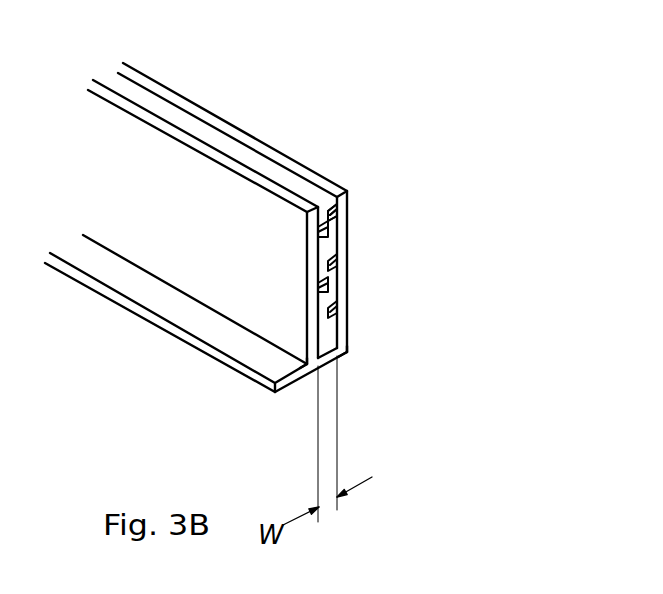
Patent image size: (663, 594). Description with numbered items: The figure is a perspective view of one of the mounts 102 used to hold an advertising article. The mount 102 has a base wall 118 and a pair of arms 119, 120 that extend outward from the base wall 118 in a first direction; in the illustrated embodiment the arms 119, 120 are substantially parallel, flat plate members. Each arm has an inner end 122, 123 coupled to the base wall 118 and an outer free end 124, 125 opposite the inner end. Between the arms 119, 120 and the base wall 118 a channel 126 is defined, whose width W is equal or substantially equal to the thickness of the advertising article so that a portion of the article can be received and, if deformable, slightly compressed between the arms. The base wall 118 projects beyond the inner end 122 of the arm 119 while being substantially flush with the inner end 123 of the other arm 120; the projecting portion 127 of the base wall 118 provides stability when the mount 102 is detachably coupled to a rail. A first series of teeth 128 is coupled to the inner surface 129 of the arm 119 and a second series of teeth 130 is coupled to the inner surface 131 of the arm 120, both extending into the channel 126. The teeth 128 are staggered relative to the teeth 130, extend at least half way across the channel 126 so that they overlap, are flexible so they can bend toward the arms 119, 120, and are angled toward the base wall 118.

The mount 102 is at (258, 246).
The base wall 118 is at (327, 363).
The arm 119 is at (128, 158).
The arm 120 is at (225, 128).
The inner end 122 is at (310, 370).
The inner end 123 is at (347, 355).
The outer free end 124 is at (307, 225).
The outer free end 125 is at (340, 205).
The channel 126 is at (327, 200).
The portion of the base wall 127 is at (185, 308).
The first series of teeth 128 is at (307, 297).
The inner surface 129 is at (307, 323).
The second series of teeth 130 is at (338, 268).
The inner surface 131 is at (338, 292).